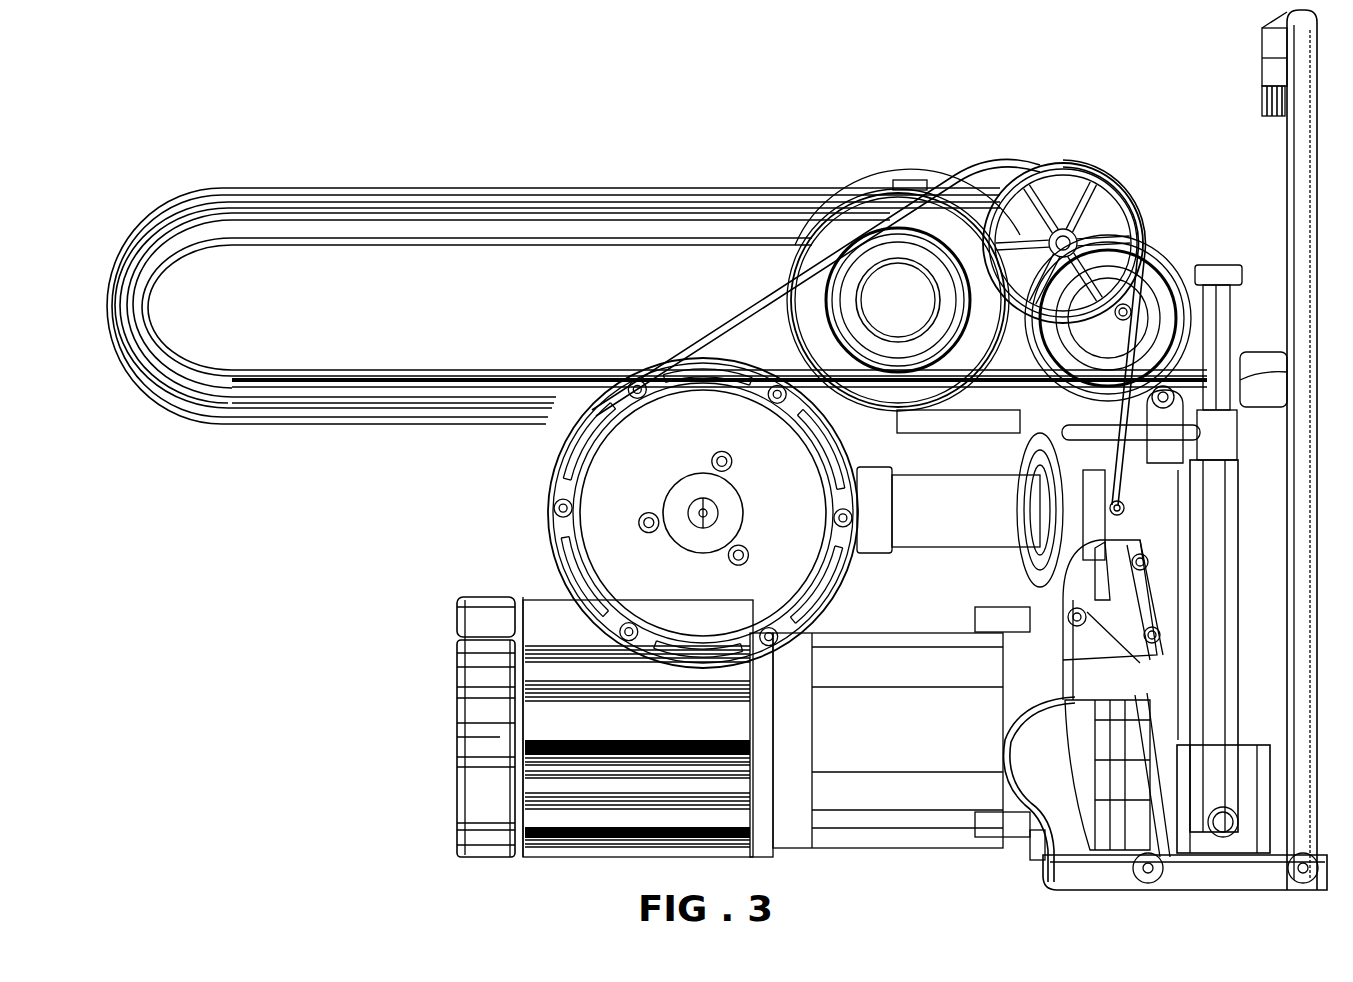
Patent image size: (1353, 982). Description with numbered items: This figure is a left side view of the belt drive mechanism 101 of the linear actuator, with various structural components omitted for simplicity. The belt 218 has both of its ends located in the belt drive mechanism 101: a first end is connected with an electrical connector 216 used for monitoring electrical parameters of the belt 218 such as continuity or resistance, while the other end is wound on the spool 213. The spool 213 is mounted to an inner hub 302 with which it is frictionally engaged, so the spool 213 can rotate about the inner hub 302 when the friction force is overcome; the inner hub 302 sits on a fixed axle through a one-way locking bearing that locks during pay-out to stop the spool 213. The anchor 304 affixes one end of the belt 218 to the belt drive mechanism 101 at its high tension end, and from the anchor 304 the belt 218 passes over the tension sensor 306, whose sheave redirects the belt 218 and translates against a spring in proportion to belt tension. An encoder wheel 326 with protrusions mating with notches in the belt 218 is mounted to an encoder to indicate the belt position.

The belt drive mechanism 101 is at (571, 49).
The belt 218 is at (775, 190).
The encoder wheel 326 is at (1085, 192).
The electrical connector 216 is at (1265, 105).
The spool 213 is at (580, 457).
The inner hub 302 is at (663, 544).
The anchor 304 is at (1103, 597).
The tension sensor 306 is at (1217, 686).